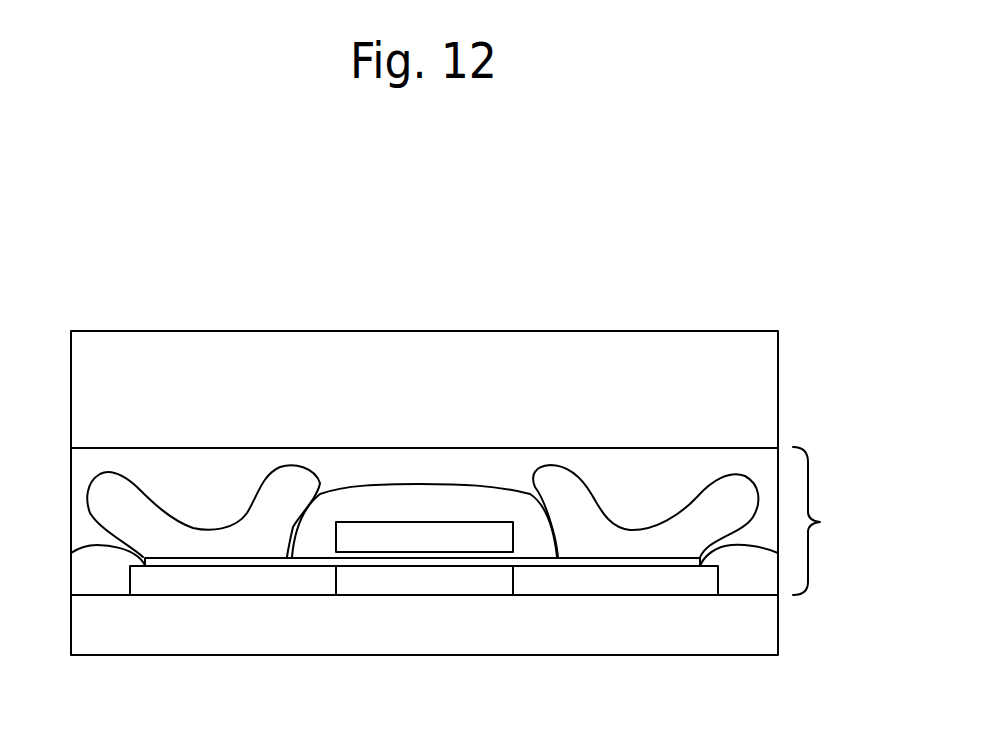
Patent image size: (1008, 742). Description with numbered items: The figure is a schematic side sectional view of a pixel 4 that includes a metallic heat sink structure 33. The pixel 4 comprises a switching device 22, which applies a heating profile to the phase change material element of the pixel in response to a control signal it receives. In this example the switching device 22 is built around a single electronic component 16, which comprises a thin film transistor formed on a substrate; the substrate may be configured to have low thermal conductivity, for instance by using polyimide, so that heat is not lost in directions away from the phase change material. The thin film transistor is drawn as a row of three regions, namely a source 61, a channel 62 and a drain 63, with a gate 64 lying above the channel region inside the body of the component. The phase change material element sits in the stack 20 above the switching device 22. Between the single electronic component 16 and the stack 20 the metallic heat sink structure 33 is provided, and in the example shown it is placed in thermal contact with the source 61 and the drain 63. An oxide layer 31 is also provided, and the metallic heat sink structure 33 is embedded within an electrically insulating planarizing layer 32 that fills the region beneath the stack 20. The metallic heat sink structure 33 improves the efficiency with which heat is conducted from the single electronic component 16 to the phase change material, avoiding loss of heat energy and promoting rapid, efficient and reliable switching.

The pixel 4 is at (580, 244).
The single electronic component 16 is at (346, 472).
The stack 20 is at (408, 394).
The switching device 22 is at (852, 535).
The oxide layer 31 is at (493, 512).
The electrically insulating planarizing layer 32 is at (650, 467).
The metallic heat sink structure 33 is at (207, 540).
The source 61 is at (229, 580).
The channel 62 is at (425, 580).
The drain 63 is at (618, 580).
The gate 64 is at (424, 540).